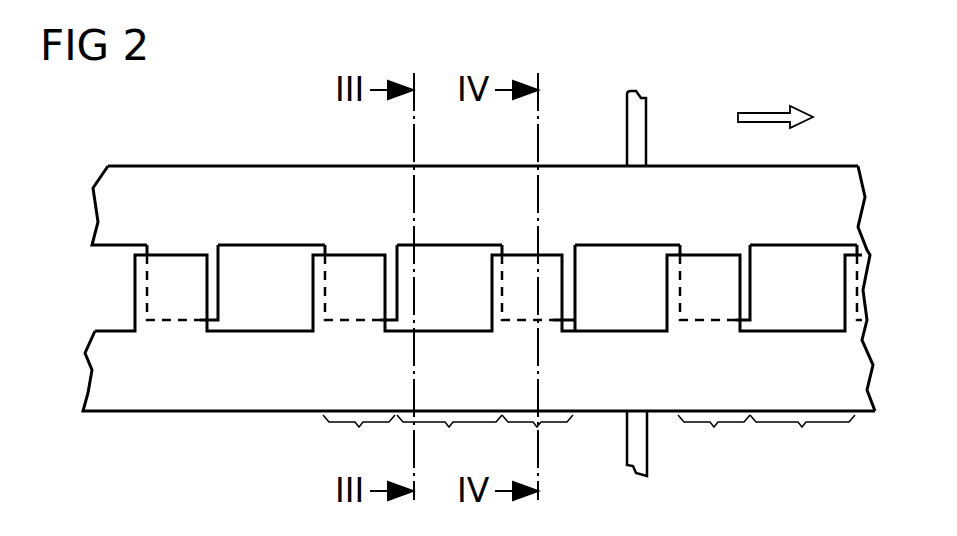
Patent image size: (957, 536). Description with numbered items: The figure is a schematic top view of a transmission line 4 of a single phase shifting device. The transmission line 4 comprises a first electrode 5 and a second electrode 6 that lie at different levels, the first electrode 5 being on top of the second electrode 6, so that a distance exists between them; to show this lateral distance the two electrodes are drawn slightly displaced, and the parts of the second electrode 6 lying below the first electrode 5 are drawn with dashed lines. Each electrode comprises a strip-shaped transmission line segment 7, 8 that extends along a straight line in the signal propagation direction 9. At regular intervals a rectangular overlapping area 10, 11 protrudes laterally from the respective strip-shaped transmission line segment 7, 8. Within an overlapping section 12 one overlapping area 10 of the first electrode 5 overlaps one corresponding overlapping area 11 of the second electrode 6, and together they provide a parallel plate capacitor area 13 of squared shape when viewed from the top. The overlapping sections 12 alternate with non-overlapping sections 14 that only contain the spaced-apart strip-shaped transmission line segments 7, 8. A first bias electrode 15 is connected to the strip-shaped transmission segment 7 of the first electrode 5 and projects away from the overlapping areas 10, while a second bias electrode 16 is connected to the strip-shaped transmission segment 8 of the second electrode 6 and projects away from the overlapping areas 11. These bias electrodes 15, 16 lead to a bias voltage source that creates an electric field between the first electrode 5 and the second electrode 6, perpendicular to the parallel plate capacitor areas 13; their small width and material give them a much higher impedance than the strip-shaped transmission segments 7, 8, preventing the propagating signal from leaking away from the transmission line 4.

The transmission line 4 is at (860, 116).
The first electrode 5 is at (104, 370).
The second electrode 6 is at (108, 188).
The strip-shaped transmission line segment 7 is at (215, 402).
The strip-shaped transmission line segment 8 is at (217, 180).
The signal propagation direction 9 is at (767, 115).
The overlapping area 10 is at (153, 298).
The overlapping area 11 is at (157, 249).
The overlapping section 12 is at (536, 436).
The parallel plate capacitor area 13 is at (183, 266).
The non-overlapping section 14 is at (626, 436).
The first bias electrode 15 is at (635, 450).
The second bias electrode 16 is at (637, 122).